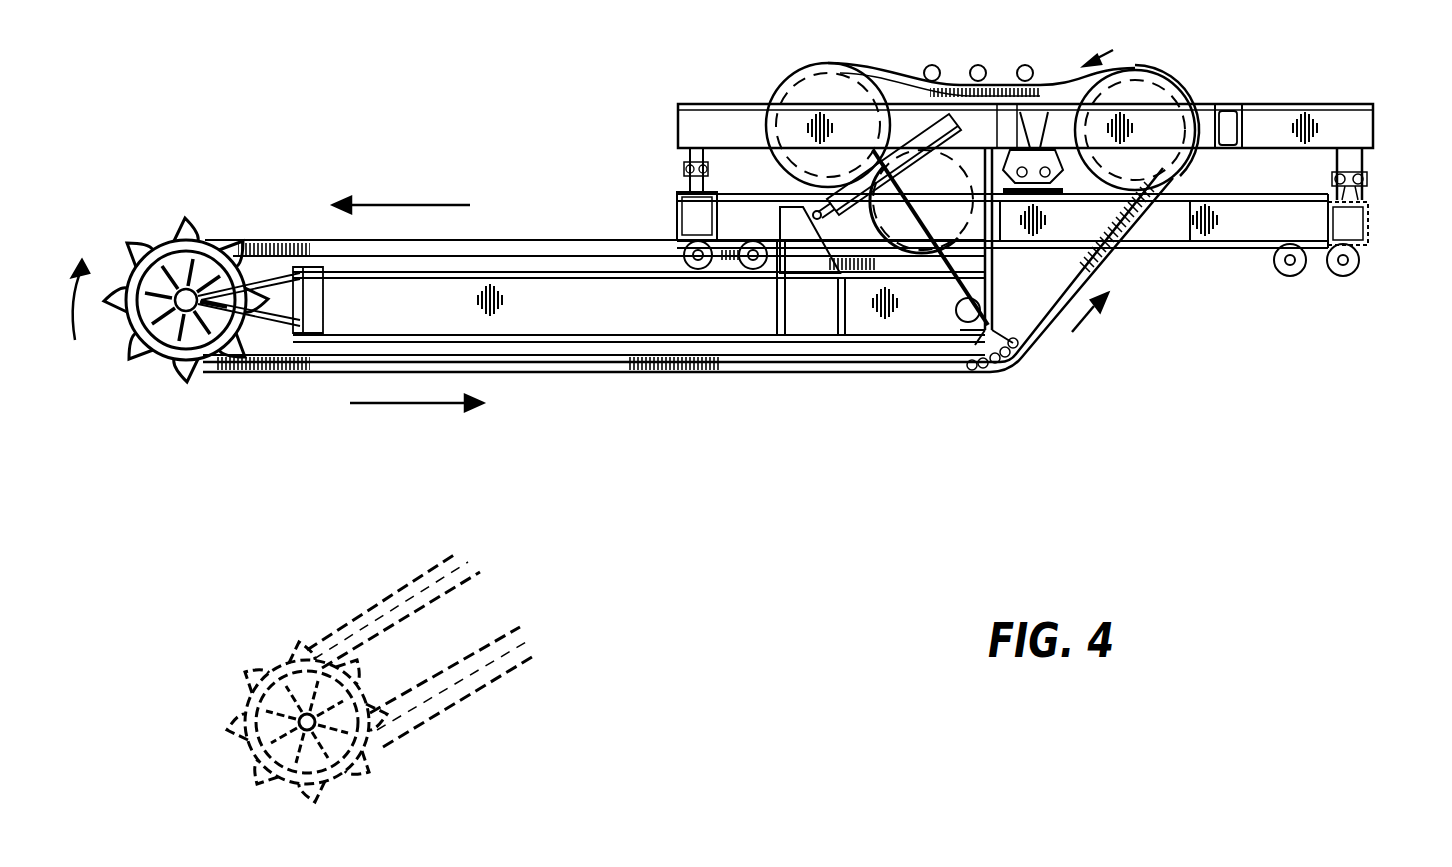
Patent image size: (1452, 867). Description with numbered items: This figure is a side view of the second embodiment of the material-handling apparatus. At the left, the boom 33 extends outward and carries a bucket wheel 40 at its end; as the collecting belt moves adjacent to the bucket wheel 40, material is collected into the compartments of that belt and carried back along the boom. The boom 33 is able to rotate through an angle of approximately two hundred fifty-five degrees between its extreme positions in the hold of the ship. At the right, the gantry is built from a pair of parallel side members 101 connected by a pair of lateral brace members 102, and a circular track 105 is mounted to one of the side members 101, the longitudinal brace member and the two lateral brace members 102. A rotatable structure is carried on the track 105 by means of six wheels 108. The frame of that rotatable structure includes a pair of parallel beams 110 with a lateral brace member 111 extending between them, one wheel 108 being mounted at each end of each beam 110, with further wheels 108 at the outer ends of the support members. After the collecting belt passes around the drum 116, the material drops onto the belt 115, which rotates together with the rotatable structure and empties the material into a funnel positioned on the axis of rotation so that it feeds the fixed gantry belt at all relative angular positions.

The boom 33 is at (621, 386).
The bucket wheel 40 is at (155, 212).
The side member 101 is at (1264, 230).
The lateral brace member 102 is at (690, 212).
The circular track 105 is at (1368, 194).
The wheel 108 is at (1368, 166).
The beam 110 is at (1283, 122).
The lateral brace member 111 is at (1229, 118).
The belt 115 is at (1067, 150).
The drum 116 is at (1173, 80).